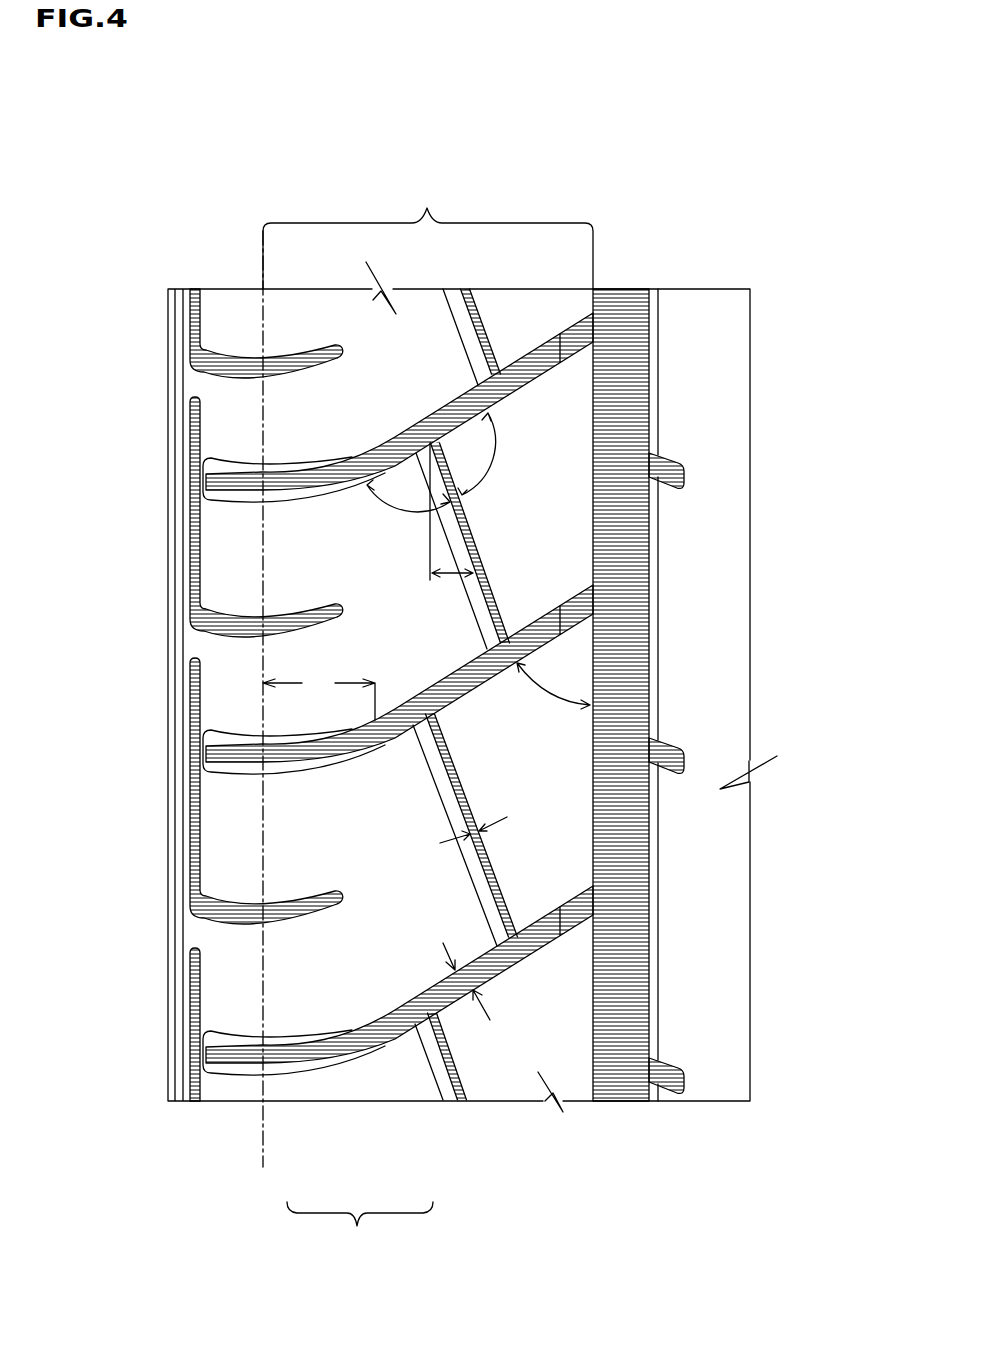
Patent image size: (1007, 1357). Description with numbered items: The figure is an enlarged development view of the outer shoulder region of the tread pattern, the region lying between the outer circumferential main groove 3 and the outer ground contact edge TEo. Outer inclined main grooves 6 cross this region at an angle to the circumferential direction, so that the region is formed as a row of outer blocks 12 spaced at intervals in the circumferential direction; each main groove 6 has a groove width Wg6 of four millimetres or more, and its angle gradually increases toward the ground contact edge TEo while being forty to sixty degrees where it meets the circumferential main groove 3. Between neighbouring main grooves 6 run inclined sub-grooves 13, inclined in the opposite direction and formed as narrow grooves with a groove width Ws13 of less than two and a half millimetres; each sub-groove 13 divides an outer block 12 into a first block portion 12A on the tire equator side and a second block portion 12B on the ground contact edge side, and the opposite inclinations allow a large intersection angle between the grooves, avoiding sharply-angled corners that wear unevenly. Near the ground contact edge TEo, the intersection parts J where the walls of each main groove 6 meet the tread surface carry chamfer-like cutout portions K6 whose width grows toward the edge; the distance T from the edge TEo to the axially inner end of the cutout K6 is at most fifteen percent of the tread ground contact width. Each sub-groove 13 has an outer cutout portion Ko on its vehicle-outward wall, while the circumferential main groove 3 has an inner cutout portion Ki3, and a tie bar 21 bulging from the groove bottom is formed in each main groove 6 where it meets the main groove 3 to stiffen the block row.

The outer region circumferential main groove 3 is at (633, 312).
The outer inclined main groove 6 is at (545, 630).
The outer block 12 is at (360, 1231).
The first block portion 12A is at (517, 858).
The second block portion 12B is at (318, 987).
The inclined sub-groove 13 is at (473, 540).
The tie bar 21 is at (580, 908).
The intersection part J is at (594, 322).
The cutout portion K6 is at (222, 1047).
The inner cutout portion Ki3 is at (653, 373).
The outer cutout portion Ko is at (478, 597).
The ground contact edge TEo is at (262, 267).
The distance T is at (319, 695).
The groove width Ws13 is at (497, 816).
The groove width Wg6 is at (498, 981).